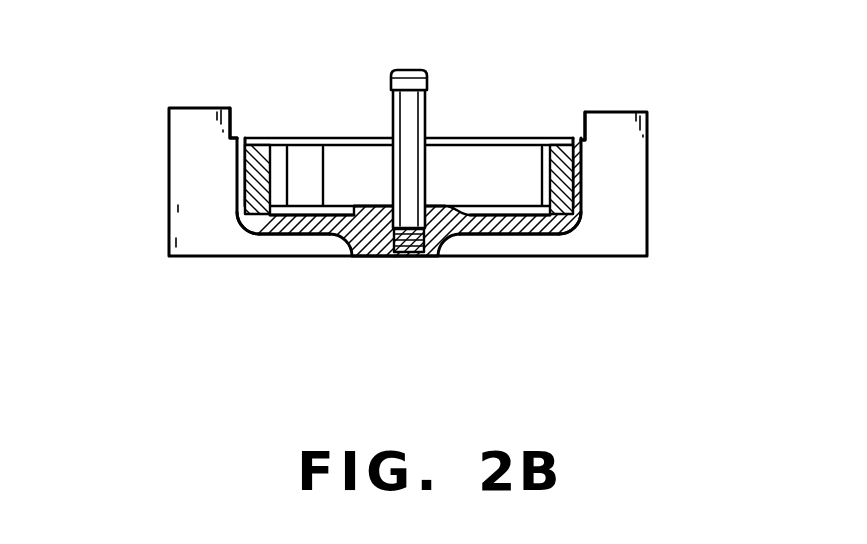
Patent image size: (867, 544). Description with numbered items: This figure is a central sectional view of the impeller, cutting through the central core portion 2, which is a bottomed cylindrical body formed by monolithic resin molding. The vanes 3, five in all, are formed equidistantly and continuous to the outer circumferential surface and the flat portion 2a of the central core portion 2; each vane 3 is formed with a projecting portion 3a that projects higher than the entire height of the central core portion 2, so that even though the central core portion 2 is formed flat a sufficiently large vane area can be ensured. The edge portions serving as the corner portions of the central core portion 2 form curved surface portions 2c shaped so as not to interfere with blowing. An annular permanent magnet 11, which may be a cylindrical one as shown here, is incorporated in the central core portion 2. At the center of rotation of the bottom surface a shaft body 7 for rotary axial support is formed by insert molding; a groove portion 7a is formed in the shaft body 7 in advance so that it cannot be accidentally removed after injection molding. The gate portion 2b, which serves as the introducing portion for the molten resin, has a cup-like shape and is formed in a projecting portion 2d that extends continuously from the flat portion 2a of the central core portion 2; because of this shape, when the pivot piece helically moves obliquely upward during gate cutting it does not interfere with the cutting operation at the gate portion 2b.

The central core portion 2 is at (480, 249).
The flat portion 2a is at (524, 236).
The gate portion 2b is at (437, 254).
The curved surface portions 2c is at (590, 226).
The projecting portion 2d is at (372, 253).
The vane 3 is at (180, 218).
The projecting portion 3a is at (607, 122).
The shaft body 7 is at (412, 127).
The groove portion 7a is at (404, 253).
The permanent magnet 11 is at (260, 140).